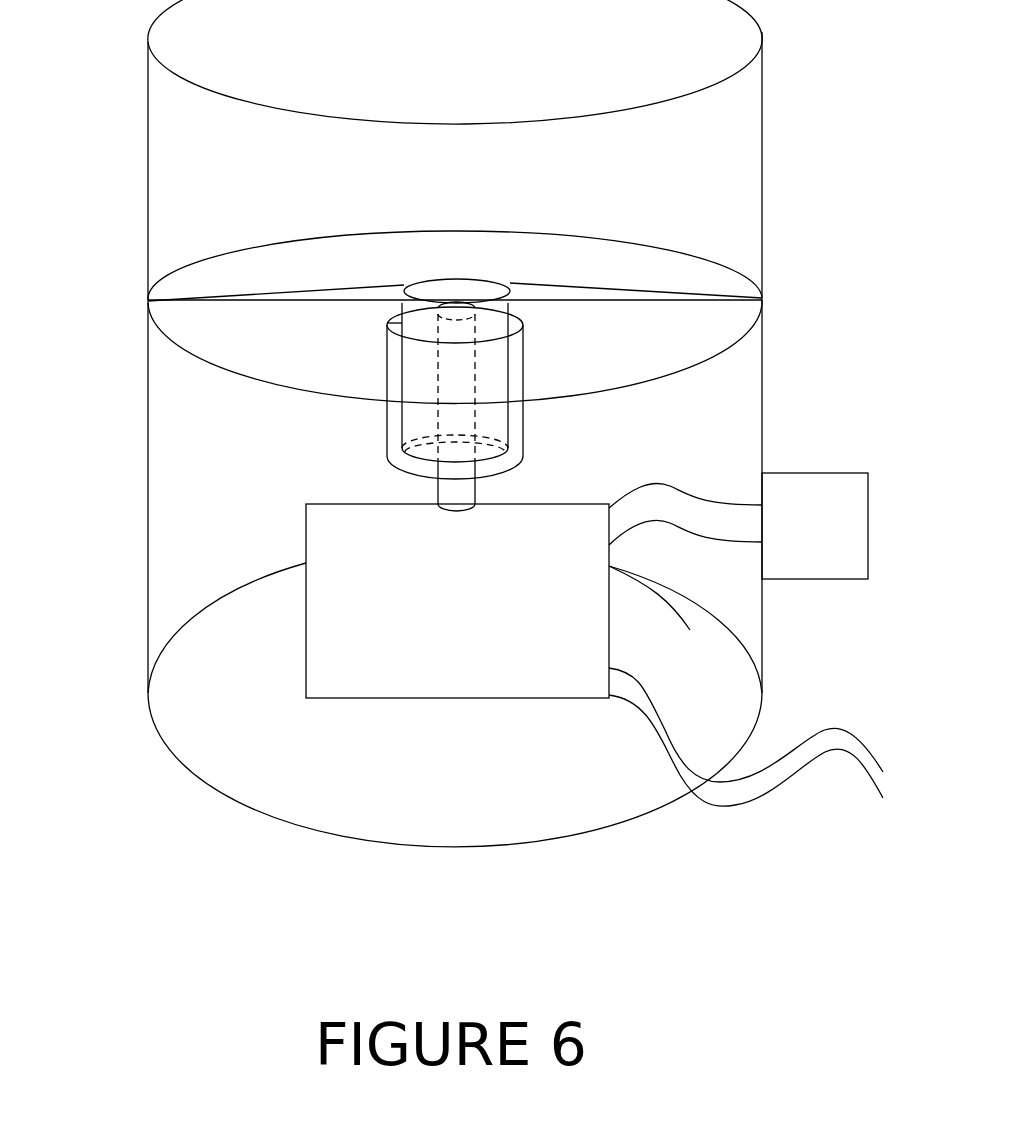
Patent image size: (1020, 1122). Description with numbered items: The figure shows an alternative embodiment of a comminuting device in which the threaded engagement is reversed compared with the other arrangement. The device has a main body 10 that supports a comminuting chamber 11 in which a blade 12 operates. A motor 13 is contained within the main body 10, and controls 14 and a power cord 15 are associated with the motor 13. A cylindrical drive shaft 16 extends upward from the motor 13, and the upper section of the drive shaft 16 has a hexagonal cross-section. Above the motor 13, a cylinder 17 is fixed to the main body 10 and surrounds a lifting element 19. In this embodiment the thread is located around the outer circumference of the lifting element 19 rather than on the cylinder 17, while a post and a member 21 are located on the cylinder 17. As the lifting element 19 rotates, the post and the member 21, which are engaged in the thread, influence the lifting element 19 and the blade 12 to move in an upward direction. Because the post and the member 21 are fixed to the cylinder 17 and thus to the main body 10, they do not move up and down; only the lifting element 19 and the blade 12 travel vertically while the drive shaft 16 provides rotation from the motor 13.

The main body 10 is at (142, 518).
The comminuting chamber 11 is at (168, 162).
The blade 12 is at (256, 308).
The motor 13 is at (457, 639).
The controls 14 is at (823, 460).
The power cord 15 is at (812, 768).
The drive shaft 16 is at (480, 493).
The cylinder 17 is at (532, 357).
The lifting element 19 is at (400, 433).
The member 21 is at (386, 322).